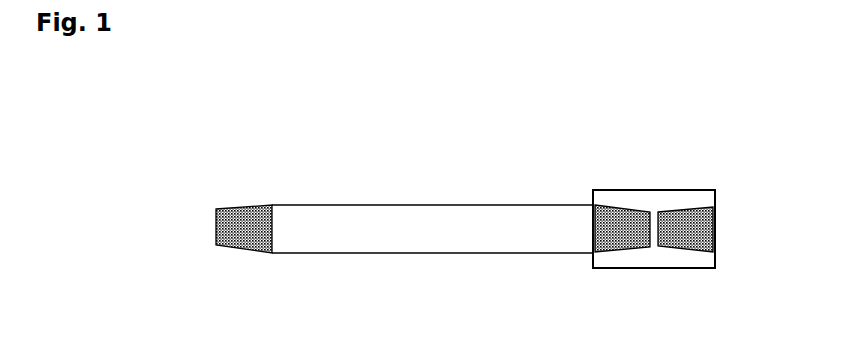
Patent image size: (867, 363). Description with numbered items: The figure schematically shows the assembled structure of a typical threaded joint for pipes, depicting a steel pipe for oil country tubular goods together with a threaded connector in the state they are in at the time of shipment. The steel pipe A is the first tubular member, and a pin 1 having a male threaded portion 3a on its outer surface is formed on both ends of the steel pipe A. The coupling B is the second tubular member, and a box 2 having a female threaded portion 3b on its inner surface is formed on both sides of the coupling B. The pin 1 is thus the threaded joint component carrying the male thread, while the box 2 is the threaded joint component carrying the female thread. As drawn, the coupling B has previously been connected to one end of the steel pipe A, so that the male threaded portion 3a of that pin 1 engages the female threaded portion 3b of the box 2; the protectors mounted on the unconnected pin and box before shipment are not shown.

The pin 1 is at (248, 192).
The box 2 is at (623, 177).
The male threaded portion 3a is at (232, 208).
The female threaded portion 3b is at (633, 248).
The steel pipe A is at (440, 160).
The coupling B is at (663, 142).